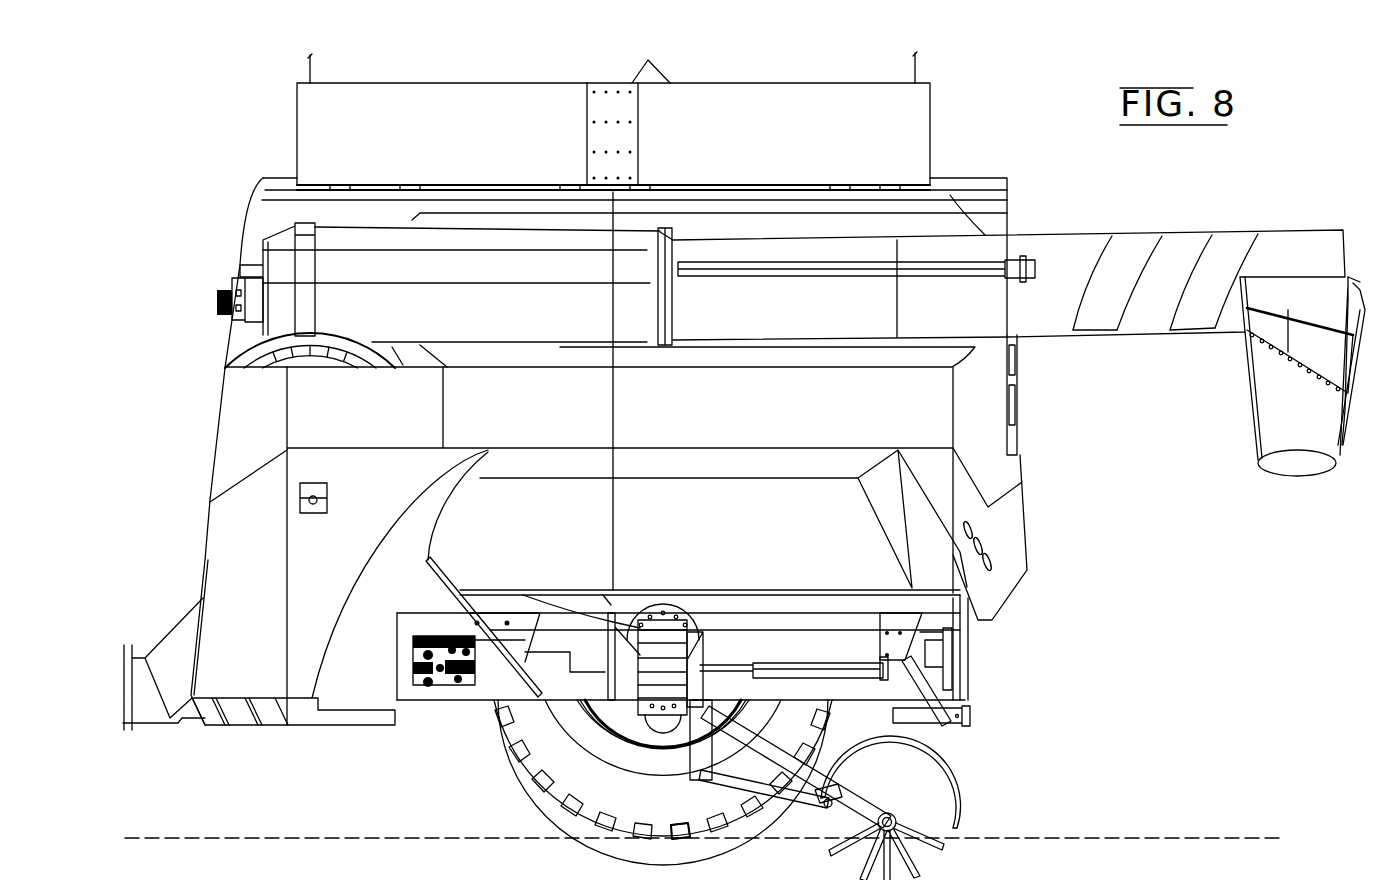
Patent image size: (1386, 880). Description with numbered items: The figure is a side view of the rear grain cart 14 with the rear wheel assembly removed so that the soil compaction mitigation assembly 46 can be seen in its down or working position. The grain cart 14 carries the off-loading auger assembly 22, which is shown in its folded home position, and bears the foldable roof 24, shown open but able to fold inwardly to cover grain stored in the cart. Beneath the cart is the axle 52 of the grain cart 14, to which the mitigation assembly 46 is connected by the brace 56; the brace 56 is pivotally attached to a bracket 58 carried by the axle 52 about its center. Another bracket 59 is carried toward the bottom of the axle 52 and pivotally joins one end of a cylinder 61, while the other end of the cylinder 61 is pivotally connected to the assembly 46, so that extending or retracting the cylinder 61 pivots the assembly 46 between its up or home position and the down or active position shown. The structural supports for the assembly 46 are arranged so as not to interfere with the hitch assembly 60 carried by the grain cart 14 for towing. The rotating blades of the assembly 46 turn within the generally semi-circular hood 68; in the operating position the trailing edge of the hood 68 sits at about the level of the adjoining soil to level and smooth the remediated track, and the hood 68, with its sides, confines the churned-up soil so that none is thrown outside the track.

The rear grain cart 14 is at (240, 130).
The foldable roof 24 is at (900, 136).
The off-loading auger assembly 22 is at (1180, 245).
The axle 52 is at (647, 710).
The bracket 58 is at (680, 757).
The brace 56 is at (767, 742).
The cylinder 61 is at (735, 792).
The bracket 59 is at (700, 822).
The hitch assembly 60 is at (971, 713).
The soil compaction mitigation assembly 46 is at (952, 770).
The hood 68 is at (935, 805).